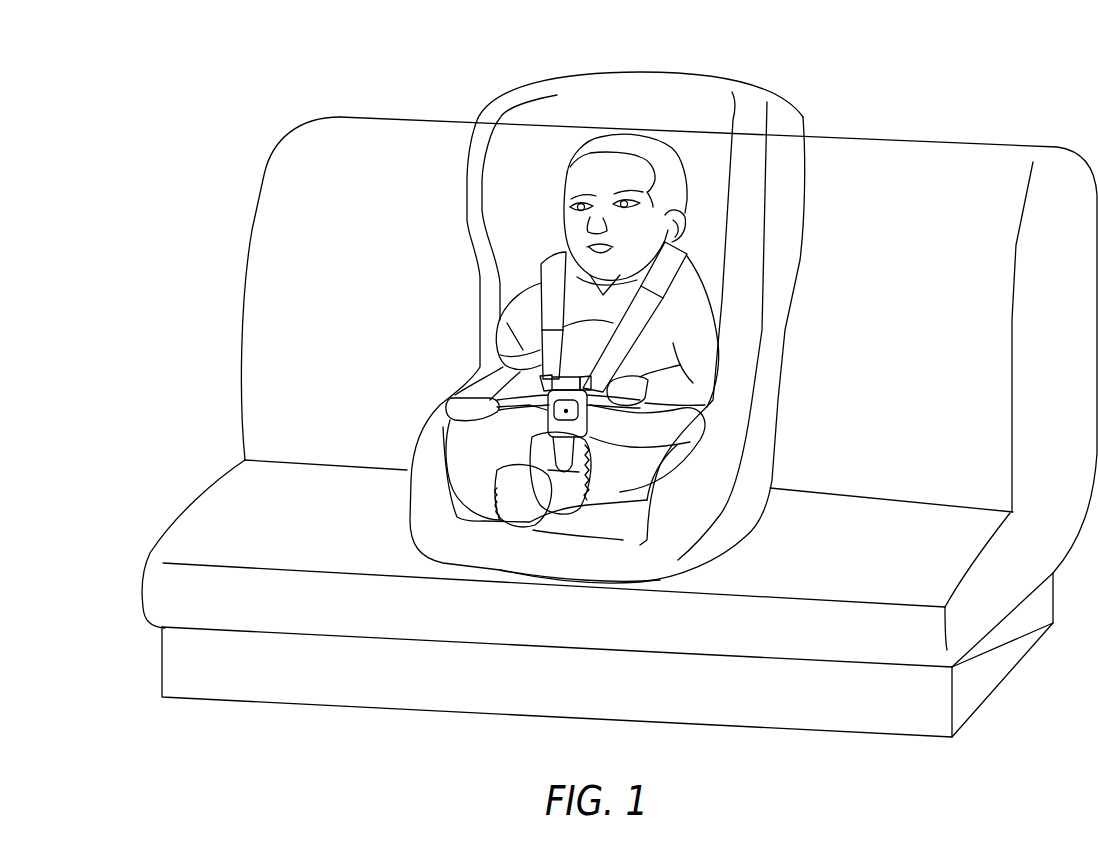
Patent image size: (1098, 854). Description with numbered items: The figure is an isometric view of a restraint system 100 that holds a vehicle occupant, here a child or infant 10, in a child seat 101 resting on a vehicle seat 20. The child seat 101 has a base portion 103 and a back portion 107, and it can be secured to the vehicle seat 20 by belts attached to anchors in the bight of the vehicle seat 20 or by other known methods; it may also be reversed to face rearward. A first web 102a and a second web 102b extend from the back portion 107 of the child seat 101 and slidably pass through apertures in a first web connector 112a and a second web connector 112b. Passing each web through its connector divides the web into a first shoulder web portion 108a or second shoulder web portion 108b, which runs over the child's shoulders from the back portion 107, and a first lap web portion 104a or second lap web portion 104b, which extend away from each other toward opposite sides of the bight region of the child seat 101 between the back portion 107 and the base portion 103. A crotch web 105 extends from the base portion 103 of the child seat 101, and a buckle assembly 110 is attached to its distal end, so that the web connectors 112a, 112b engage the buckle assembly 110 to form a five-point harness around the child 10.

The child or infant 10 is at (607, 145).
The vehicle seat 20 is at (994, 160).
The restraint system 100 is at (694, 232).
The child seat 101 is at (688, 72).
The base portion 103 is at (590, 518).
The crotch web 105 is at (560, 453).
The back portion 107 is at (720, 117).
The first web 102a is at (545, 298).
The second web 102b is at (637, 318).
The first lap web portion 104a is at (497, 387).
The second lap web portion 104b is at (642, 402).
The first shoulder web portion 108a is at (541, 290).
The second shoulder web portion 108b is at (672, 283).
The buckle assembly 110 is at (548, 432).
The first web connector 112a is at (538, 388).
The second web connector 112b is at (600, 436).